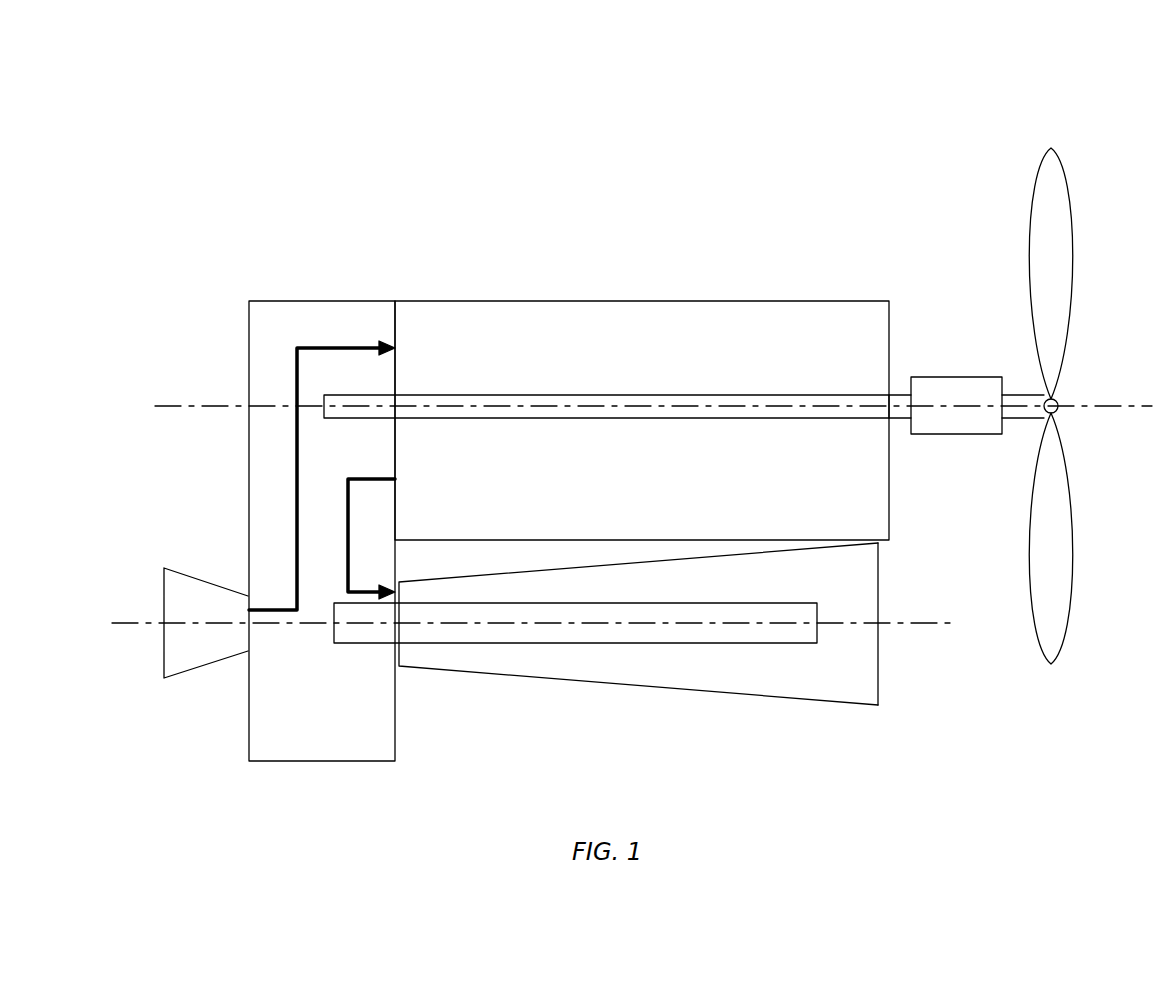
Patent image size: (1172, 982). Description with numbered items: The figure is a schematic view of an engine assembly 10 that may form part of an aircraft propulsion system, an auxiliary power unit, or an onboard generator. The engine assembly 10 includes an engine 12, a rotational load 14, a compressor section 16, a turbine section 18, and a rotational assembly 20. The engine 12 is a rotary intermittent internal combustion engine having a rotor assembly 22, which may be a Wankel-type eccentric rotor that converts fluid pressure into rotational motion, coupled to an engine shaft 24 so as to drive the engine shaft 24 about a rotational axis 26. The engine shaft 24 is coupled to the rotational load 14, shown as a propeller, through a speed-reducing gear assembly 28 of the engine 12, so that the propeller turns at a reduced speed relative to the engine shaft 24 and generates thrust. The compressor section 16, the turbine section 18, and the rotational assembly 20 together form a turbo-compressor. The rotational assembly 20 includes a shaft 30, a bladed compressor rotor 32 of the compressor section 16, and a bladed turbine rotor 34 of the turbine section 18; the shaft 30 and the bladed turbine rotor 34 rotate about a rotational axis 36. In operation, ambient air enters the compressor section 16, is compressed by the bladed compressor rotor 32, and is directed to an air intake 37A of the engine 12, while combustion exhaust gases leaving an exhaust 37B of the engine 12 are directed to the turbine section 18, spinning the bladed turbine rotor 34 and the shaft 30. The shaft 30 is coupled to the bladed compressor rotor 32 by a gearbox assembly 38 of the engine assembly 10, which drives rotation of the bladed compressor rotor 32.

The engine assembly 10 is at (904, 131).
The engine 12 is at (642, 370).
The rotational load 14 is at (1072, 270).
The compressor section 16 is at (526, 628).
The turbine section 18 is at (606, 667).
The rotational assembly 20 is at (603, 664).
The rotor assembly 22 is at (433, 337).
The engine shaft 24 is at (695, 395).
The rotational axis 26 is at (164, 405).
The speed-reducing gear assembly 28 is at (958, 377).
The shaft 30 is at (478, 640).
The bladed compressor rotor 32 is at (165, 601).
The bladed turbine rotor 34 is at (808, 670).
The rotational axis 36 is at (943, 627).
The air intake 37A is at (392, 348).
The exhaust 37B is at (393, 478).
The gearbox assembly 38 is at (275, 457).